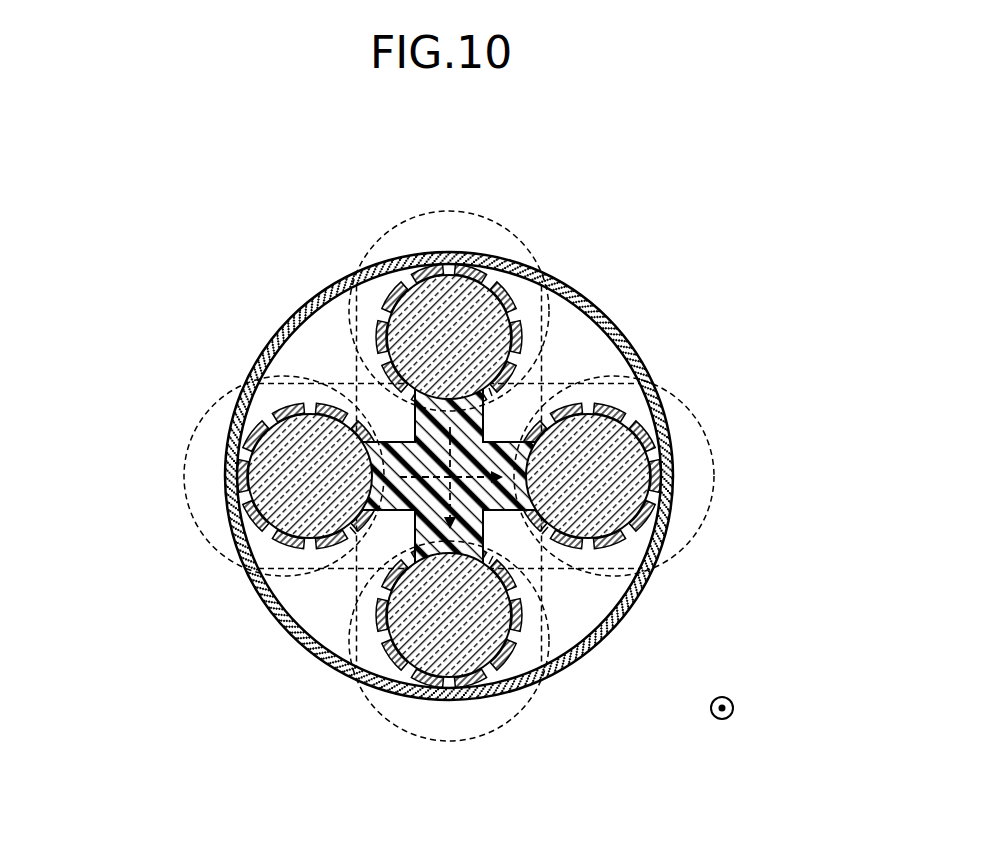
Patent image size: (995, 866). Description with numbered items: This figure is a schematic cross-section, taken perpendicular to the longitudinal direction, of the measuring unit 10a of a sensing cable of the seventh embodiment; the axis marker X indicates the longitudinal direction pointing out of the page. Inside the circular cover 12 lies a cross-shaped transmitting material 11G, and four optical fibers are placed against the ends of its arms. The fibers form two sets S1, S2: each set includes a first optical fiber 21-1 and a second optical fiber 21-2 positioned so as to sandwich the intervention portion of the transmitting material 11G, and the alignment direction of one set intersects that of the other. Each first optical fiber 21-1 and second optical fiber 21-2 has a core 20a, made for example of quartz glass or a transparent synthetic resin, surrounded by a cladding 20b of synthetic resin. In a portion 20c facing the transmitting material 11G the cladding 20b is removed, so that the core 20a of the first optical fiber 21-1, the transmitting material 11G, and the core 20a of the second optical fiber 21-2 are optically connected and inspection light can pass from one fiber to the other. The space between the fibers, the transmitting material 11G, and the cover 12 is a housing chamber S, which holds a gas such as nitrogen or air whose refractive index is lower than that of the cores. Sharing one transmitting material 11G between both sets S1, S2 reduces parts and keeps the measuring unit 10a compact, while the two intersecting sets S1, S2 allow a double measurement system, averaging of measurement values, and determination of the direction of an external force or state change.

The measuring unit 10a is at (653, 246).
The transmitting material 11G is at (413, 413).
The cover 12 is at (641, 360).
The core 20a is at (447, 297).
The cladding 20b is at (468, 265).
The portion (removal portion) 20c is at (492, 391).
The first optical fiber 21-1 is at (488, 175).
The second optical fiber 21-2 is at (375, 783).
The housing chamber S is at (563, 320).
The set S1 is at (693, 567).
The set S2 is at (376, 714).
The X axis direction X is at (722, 723).